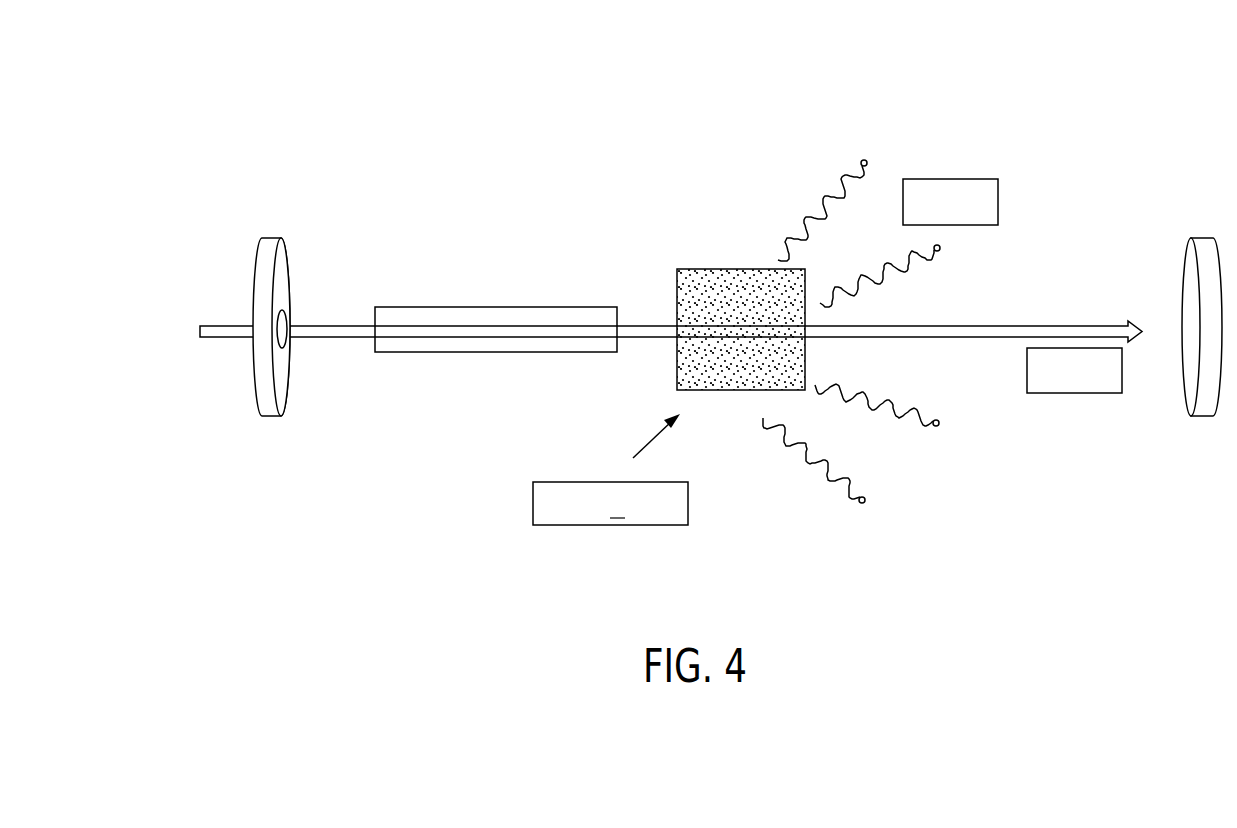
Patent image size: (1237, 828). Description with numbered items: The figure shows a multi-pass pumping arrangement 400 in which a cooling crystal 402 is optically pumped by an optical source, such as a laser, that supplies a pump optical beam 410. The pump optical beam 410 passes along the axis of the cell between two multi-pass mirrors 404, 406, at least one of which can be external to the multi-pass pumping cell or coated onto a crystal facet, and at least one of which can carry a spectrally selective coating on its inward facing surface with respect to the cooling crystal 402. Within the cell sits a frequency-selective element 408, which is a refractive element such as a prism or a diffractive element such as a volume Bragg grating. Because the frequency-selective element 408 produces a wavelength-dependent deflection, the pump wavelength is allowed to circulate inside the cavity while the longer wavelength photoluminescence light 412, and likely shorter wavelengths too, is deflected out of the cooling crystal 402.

The multi-pass pumping arrangement 400 is at (240, 131).
The cooling crystal 402 is at (490, 352).
The multi-pass mirror 404 is at (268, 417).
The multi-pass mirror 406 is at (1202, 417).
The frequency-selective element 408 is at (598, 525).
The pump optical beam 410 is at (223, 338).
The longer wavelength PL light 412 is at (982, 225).